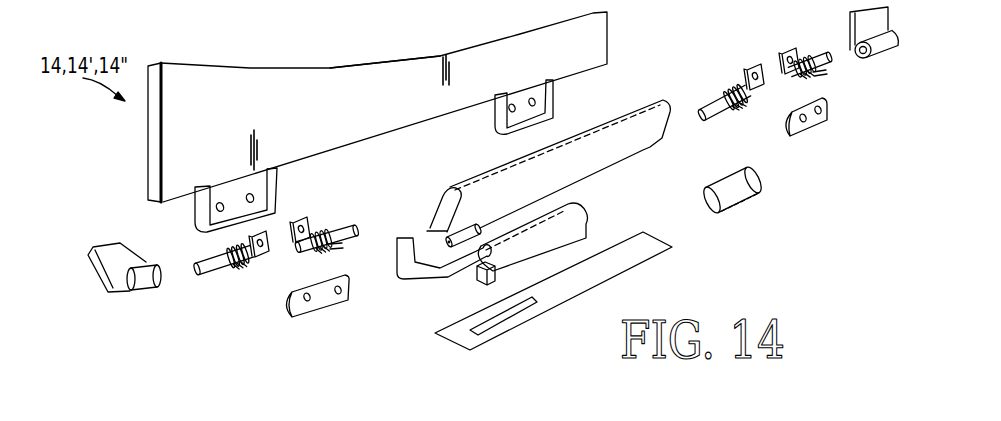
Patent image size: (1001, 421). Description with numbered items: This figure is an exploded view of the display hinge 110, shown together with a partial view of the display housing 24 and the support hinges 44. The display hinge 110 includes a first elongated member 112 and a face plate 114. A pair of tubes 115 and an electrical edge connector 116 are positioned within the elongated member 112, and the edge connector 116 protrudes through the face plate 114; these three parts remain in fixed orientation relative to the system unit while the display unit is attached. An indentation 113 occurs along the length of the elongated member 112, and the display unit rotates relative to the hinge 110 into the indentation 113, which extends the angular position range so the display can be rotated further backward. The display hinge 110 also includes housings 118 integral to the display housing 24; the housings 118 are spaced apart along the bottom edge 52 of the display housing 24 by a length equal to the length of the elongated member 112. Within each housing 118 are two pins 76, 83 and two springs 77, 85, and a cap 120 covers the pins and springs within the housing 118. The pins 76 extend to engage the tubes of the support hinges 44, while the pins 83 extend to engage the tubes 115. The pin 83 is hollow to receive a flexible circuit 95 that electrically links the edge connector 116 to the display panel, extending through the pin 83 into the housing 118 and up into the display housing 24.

The display housing 24 is at (153, 142).
The bottom edge 52 is at (360, 141).
The housing 118 is at (267, 193).
The first elongated member 112 is at (643, 149).
The indentation 113 is at (436, 220).
The tube 115 is at (471, 230).
The flexible circuit 95 is at (399, 239).
The electrical edge connector 116 is at (588, 226).
The face plate 114 is at (628, 263).
The pin 76 is at (208, 277).
The spring 77 is at (247, 273).
The pin 83 is at (349, 242).
The spring 85 is at (315, 253).
The cap 120 is at (322, 308).
The support hinge 44 is at (125, 291).
The display hinge 110 is at (261, 345).